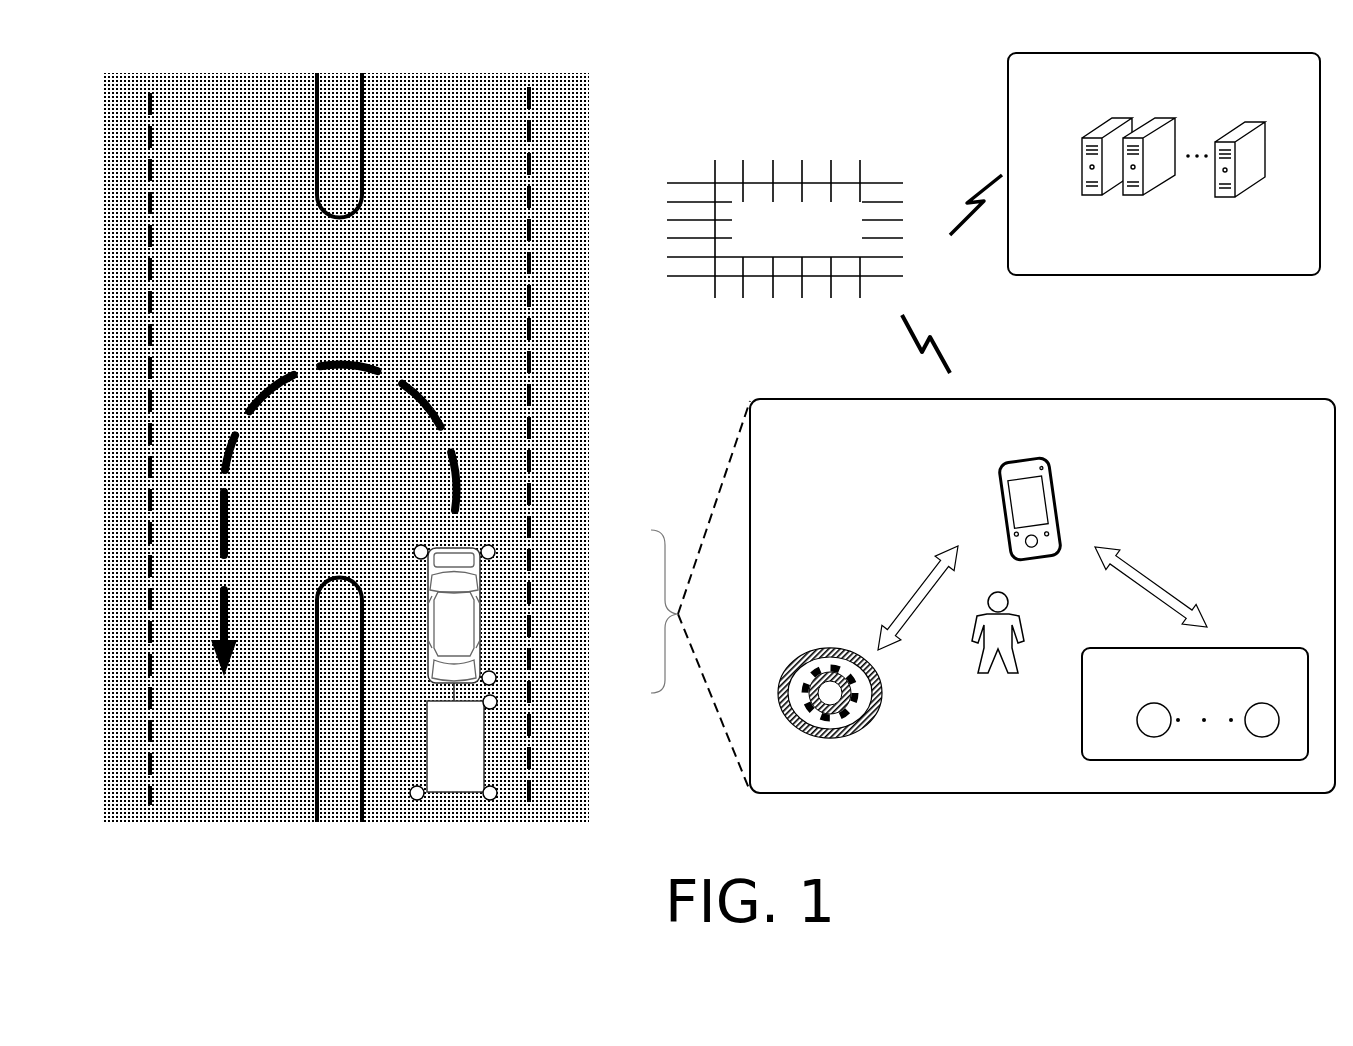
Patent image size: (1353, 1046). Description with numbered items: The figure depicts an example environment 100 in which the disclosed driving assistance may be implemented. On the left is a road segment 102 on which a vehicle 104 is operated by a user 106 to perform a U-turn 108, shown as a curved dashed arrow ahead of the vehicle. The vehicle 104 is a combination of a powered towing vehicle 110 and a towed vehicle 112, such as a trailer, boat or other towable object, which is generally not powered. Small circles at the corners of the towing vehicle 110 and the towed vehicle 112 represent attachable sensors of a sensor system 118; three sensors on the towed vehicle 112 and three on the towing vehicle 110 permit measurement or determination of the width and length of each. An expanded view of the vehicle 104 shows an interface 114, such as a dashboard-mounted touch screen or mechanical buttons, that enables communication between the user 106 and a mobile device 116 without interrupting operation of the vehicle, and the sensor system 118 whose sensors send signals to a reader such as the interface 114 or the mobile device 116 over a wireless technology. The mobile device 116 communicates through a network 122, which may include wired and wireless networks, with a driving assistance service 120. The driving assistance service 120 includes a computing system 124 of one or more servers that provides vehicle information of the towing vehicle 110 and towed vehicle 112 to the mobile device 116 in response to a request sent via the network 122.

The environment 100 is at (823, 28).
The road segment 102 is at (457, 90).
The vehicle 104 is at (1042, 596).
The user 106 is at (988, 668).
The U-turn 108 is at (396, 364).
The towing vehicle 110 is at (482, 614).
The towed vehicle 112 is at (484, 745).
The interface 114 is at (838, 650).
The mobile device 116 is at (1004, 488).
The sensor system 118 is at (1195, 704).
The driving assistance service 120 is at (1164, 164).
The network 122 is at (785, 229).
The computing system 124 is at (1173, 192).